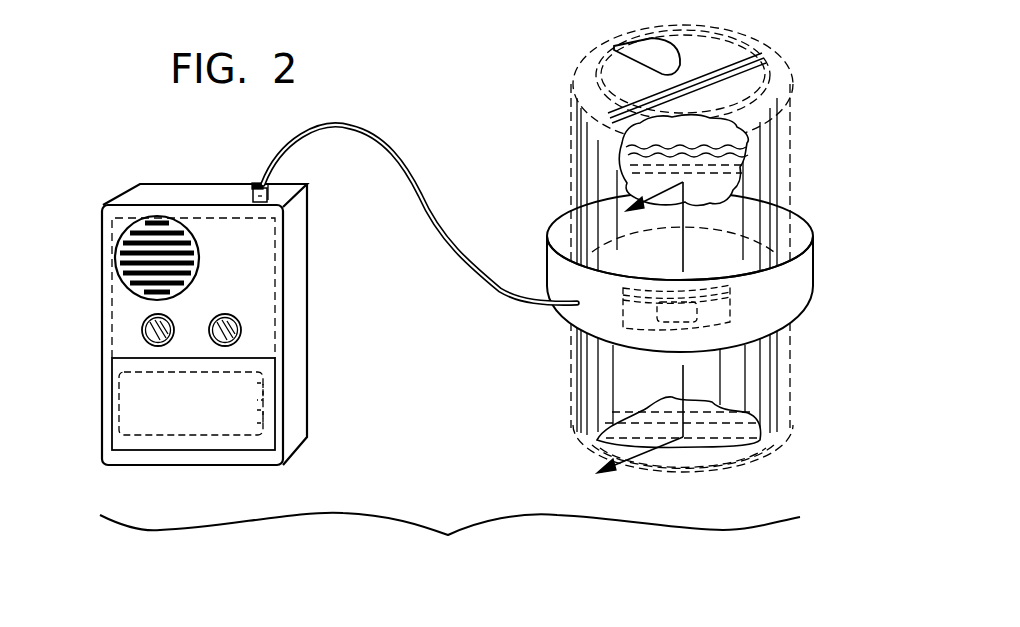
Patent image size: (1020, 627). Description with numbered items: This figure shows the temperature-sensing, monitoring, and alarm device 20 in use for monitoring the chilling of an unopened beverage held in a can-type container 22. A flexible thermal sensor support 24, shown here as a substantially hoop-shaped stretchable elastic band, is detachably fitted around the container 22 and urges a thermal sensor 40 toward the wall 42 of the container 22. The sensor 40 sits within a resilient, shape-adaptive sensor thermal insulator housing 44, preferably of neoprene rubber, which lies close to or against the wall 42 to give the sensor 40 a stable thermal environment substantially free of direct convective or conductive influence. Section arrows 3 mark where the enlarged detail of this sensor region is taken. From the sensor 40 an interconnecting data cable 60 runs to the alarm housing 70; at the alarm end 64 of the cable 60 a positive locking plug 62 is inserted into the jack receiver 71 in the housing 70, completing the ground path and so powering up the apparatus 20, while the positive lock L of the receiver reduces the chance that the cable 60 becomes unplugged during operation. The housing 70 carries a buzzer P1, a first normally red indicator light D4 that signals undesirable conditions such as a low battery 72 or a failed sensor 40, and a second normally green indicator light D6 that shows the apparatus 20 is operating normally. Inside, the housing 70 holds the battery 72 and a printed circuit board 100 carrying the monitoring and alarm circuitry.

The temperature-sensing, monitoring, and alarm device 20 is at (450, 539).
The container 22 is at (783, 82).
The flexible thermal sensor support 24 is at (814, 232).
The thermal sensor 40 is at (697, 318).
The wall 42 is at (657, 382).
The sensor thermal insulator housing 44 is at (734, 285).
The interconnecting cable 60 is at (413, 167).
The positive locking plug 62 is at (254, 183).
The alarm end 64 is at (268, 181).
The alarm housing 70 is at (298, 350).
The jack receiver 71 is at (253, 198).
The battery 72 is at (192, 436).
The printed circuit board 100 is at (282, 353).
The buzzer P1 is at (125, 270).
The first indicator light D4 is at (242, 325).
The second indicator light D6 is at (172, 322).
The positive lock L is at (270, 199).
The section line 3 is at (679, 294).